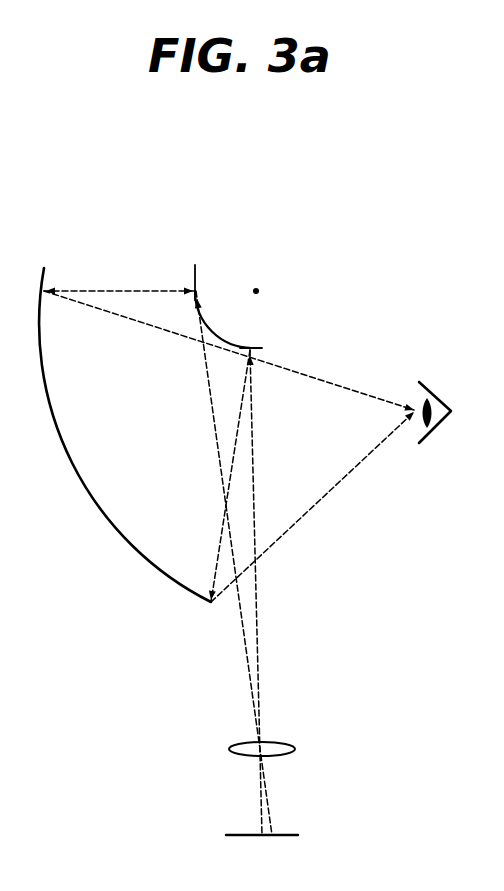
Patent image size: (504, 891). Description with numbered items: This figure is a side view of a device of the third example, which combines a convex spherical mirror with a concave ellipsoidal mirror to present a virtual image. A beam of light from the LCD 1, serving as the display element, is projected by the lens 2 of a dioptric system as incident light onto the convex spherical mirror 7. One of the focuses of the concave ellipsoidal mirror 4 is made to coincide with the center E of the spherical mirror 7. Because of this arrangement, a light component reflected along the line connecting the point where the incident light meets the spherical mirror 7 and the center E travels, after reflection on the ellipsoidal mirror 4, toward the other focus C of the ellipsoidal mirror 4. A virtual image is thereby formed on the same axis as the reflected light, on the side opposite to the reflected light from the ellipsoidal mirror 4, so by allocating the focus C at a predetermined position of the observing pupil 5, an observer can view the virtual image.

The LCD 1 is at (254, 833).
The lens 2 is at (275, 742).
The concave ellipsoidal mirror 4 is at (53, 422).
The observing pupil 5 is at (417, 400).
The convex spherical mirror 7 is at (193, 276).
The center of the spherical mirror E is at (259, 290).
The focus of the ellipsoidal mirror C is at (412, 414).